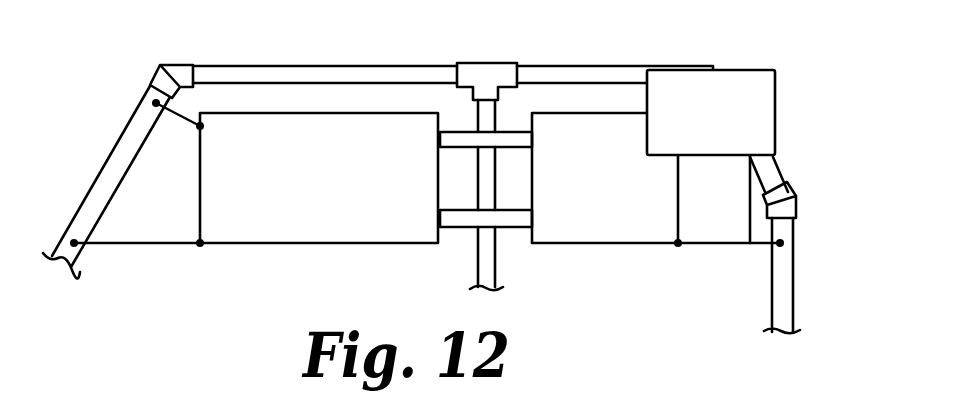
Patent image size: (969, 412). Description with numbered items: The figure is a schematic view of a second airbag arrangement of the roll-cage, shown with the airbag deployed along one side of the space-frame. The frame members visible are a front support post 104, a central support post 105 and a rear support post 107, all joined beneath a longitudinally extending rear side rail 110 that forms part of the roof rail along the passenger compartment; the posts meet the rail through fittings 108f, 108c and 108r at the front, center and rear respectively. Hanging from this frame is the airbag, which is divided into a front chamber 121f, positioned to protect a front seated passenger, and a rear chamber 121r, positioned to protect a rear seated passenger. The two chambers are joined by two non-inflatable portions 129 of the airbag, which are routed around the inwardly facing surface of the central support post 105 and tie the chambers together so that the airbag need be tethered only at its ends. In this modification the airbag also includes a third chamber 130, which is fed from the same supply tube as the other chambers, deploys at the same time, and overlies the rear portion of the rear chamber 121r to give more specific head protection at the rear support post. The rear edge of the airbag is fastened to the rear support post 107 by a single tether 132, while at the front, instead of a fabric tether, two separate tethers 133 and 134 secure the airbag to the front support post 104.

The front support post 104 is at (101, 173).
The central support post 105 is at (497, 273).
The rear support post 107 is at (783, 283).
The front elbow fitting 108f is at (178, 68).
The center tee fitting 108c is at (477, 70).
The rear elbow fitting 108r is at (780, 192).
The rear side rail 110 is at (632, 63).
The front chamber 121f is at (305, 228).
The rear chamber 121r is at (623, 228).
The non-inflatable portion 129 is at (452, 136).
The third chamber 130 is at (760, 91).
The tether 132 is at (760, 245).
The tether 133 is at (145, 247).
The tether 134 is at (177, 110).